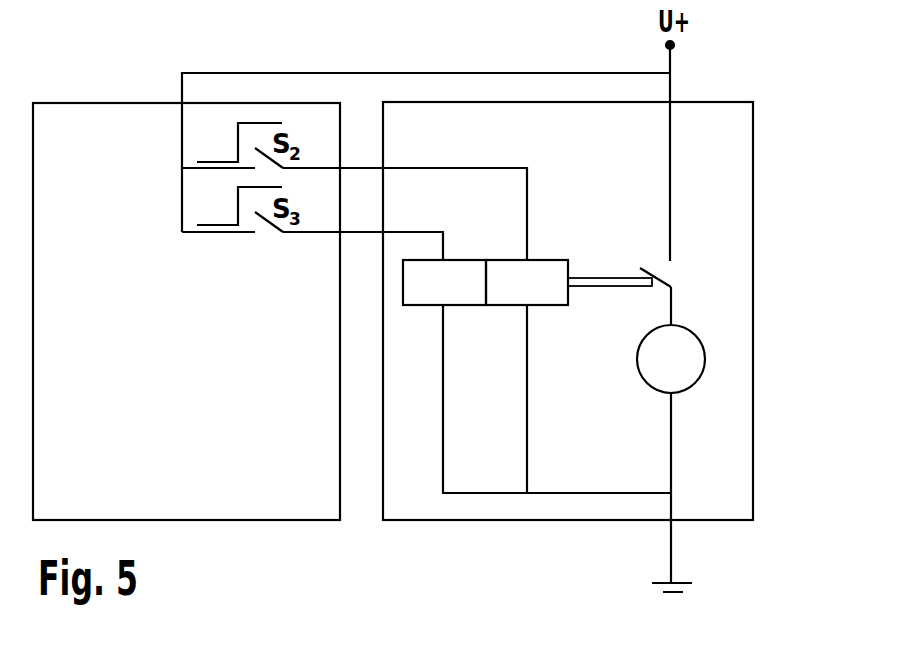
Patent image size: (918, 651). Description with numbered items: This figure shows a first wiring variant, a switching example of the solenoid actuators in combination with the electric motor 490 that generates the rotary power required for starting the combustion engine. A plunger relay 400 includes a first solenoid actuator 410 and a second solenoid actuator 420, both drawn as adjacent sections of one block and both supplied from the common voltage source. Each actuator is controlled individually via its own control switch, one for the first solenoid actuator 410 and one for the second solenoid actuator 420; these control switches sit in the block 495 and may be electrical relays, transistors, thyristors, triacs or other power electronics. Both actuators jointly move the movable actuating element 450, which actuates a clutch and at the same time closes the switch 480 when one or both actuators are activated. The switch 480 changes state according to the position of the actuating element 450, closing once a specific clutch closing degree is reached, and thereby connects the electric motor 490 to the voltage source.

The control unit / switch module 495 is at (90, 122).
The plunger relay 400 is at (420, 312).
The first solenoid actuator 410 is at (465, 272).
The second solenoid actuator 420 is at (548, 295).
The movable actuating element 450 is at (607, 278).
The switch 480 is at (662, 273).
The electric motor 490 is at (697, 362).